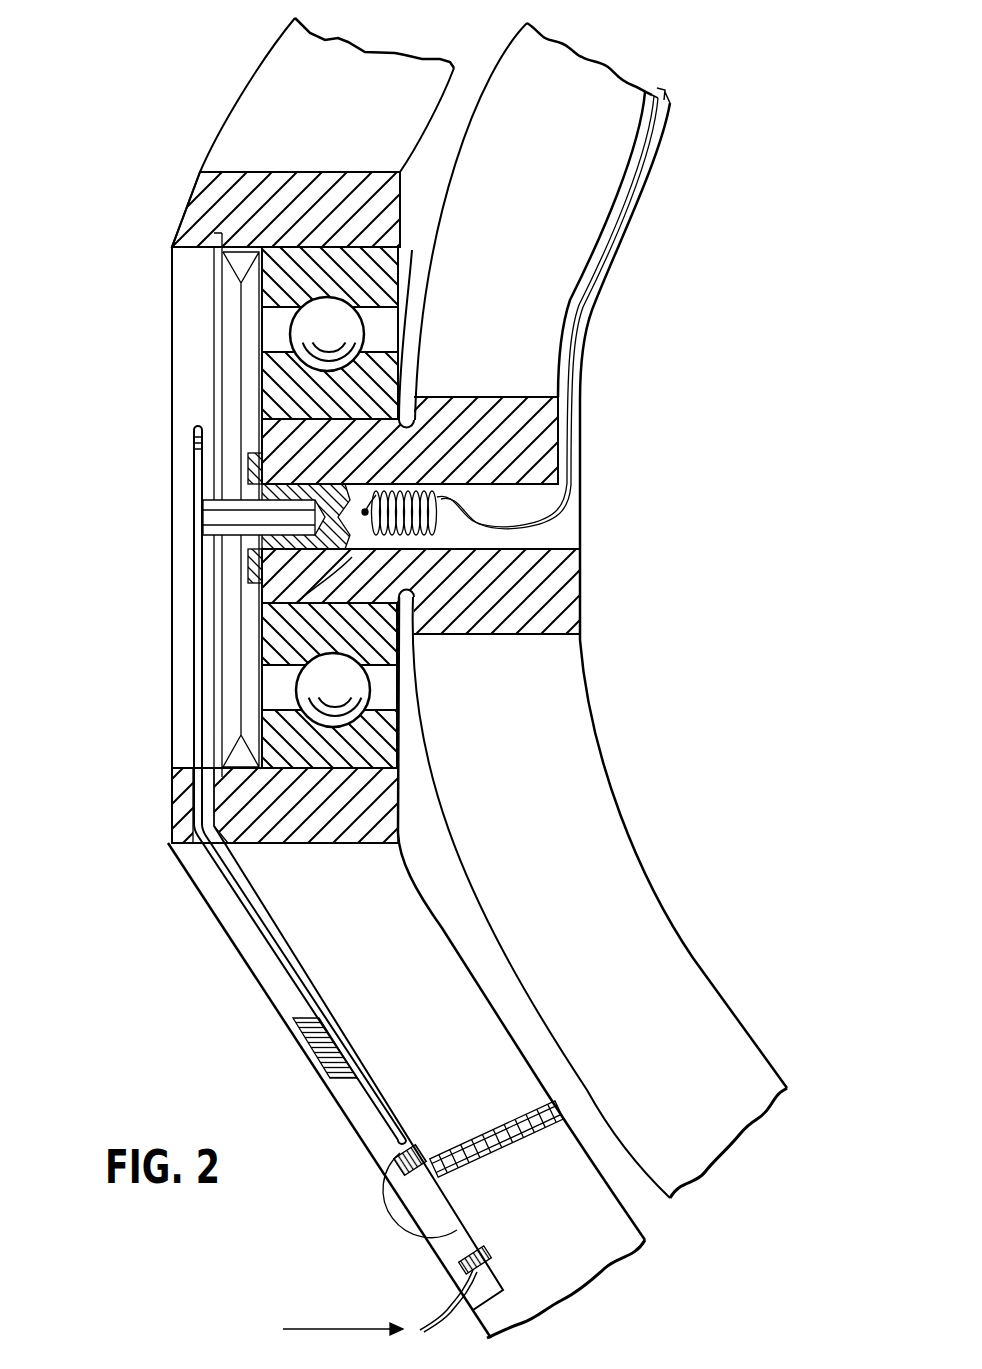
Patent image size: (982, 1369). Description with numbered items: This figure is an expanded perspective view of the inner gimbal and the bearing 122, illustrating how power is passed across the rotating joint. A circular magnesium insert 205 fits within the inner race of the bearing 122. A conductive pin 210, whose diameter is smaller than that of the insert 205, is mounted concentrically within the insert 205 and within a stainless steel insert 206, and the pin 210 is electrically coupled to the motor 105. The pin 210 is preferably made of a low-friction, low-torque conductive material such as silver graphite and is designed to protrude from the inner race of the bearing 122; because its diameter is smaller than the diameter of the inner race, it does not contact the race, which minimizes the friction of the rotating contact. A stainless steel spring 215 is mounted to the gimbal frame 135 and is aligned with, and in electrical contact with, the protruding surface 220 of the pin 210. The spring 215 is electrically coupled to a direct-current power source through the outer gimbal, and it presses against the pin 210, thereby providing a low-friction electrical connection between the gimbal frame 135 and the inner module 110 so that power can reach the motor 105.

The motor 105 is at (684, 60).
The inner module 110 is at (560, 855).
The bearing 122 is at (372, 678).
The gimbal frame 135 is at (405, 982).
The circular magnesium insert 205 is at (548, 446).
The stainless steel insert 206 is at (284, 612).
The conductive pin 210 is at (222, 544).
The stainless steel spring 215 is at (197, 721).
The protruding surface 220 is at (190, 514).